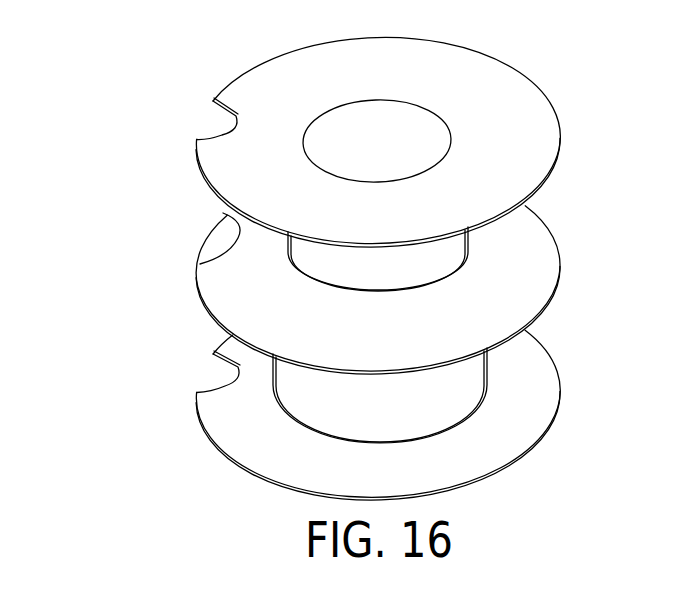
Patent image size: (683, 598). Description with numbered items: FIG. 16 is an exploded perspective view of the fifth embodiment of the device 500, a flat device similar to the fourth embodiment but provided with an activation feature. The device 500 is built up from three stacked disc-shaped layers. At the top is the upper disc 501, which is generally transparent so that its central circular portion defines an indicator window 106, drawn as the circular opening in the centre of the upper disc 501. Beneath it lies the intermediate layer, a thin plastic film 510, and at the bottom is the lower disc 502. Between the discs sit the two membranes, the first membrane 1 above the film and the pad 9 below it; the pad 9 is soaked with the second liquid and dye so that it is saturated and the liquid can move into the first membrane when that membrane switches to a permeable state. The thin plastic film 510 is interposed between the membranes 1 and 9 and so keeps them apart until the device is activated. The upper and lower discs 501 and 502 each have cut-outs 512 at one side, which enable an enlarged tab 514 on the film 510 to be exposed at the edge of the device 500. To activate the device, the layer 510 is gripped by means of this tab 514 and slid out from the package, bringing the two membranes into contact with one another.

The device 500 is at (116, 384).
The upper disc 501 is at (545, 133).
The indicator window 106 is at (408, 120).
The cut-outs 512 is at (236, 120).
The first membrane 1 is at (452, 252).
The thin plastic film 510 is at (218, 288).
The enlarged tab 514 is at (209, 246).
The pad 9 is at (472, 378).
The lower disc 502 is at (513, 443).